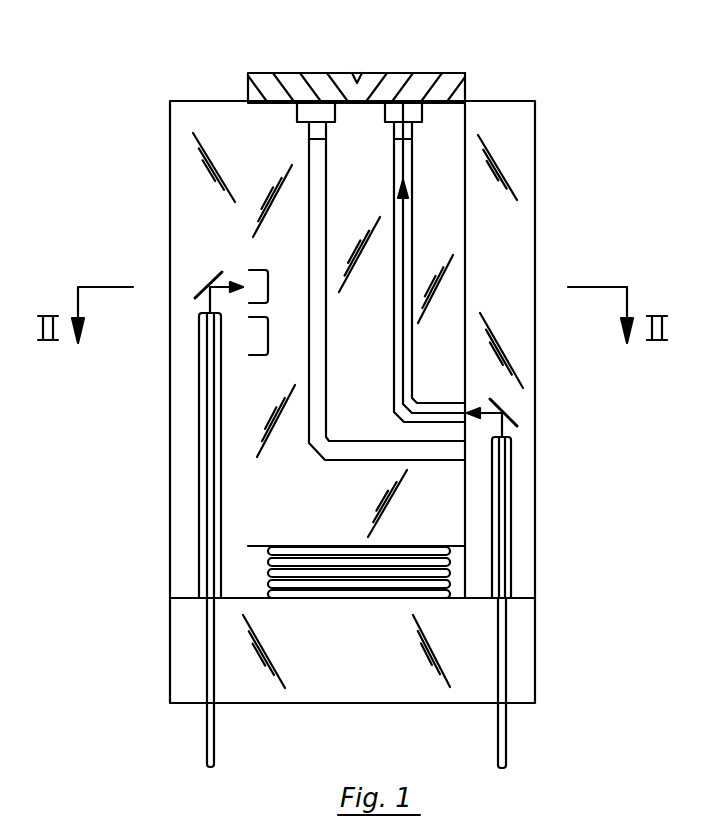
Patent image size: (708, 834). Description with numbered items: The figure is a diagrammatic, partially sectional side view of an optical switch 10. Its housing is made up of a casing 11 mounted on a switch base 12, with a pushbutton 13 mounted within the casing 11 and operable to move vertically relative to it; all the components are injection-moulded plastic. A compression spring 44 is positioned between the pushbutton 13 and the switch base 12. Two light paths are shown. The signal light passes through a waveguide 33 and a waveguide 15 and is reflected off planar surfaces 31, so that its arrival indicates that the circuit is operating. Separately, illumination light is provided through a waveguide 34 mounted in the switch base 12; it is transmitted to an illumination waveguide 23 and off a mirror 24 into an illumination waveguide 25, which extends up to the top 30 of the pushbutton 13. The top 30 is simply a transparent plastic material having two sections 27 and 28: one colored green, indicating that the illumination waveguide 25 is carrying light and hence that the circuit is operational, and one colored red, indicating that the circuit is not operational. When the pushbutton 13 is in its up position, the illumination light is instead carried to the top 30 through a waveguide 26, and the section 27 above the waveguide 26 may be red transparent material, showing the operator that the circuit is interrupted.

The optical switch 10 is at (112, 200).
The casing 11 is at (537, 187).
The switch base 12 is at (535, 648).
The pushbutton 13 is at (467, 127).
The waveguide 15 is at (198, 424).
The illumination waveguide 23 is at (512, 489).
The mirror 24 is at (510, 416).
The illumination waveguide 25 is at (413, 228).
The waveguide 26 is at (307, 152).
The top section 27 is at (268, 72).
The top section 28 is at (451, 72).
The top 30 is at (465, 81).
The planar surfaces 31 is at (250, 274).
The waveguide 33 is at (207, 726).
The waveguide 34 is at (506, 736).
The compression spring 44 is at (452, 563).